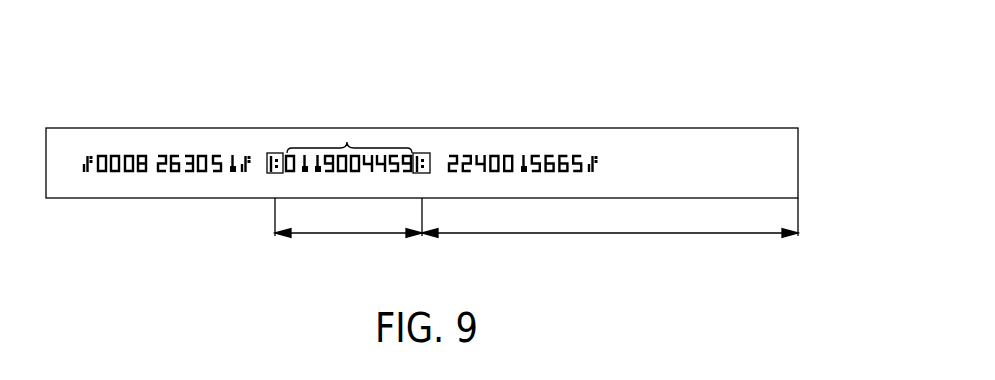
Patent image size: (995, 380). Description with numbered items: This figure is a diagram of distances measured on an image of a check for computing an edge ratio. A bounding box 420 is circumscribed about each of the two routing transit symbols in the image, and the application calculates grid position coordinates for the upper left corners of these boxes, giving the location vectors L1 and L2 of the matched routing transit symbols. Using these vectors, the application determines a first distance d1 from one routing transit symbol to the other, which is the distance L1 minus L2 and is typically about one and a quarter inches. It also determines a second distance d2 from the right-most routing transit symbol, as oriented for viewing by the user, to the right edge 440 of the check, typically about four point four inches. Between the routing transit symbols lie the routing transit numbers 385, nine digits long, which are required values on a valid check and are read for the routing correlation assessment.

The routing transit numbers 385 is at (347, 142).
The bounding box 420 is at (430, 153).
The edge of the check 440 is at (798, 152).
The location vector of first routing transit symbol L1 is at (261, 140).
The location vector of second routing transit symbol L2 is at (404, 140).
The first distance d1 is at (348, 244).
The second distance d2 is at (610, 244).